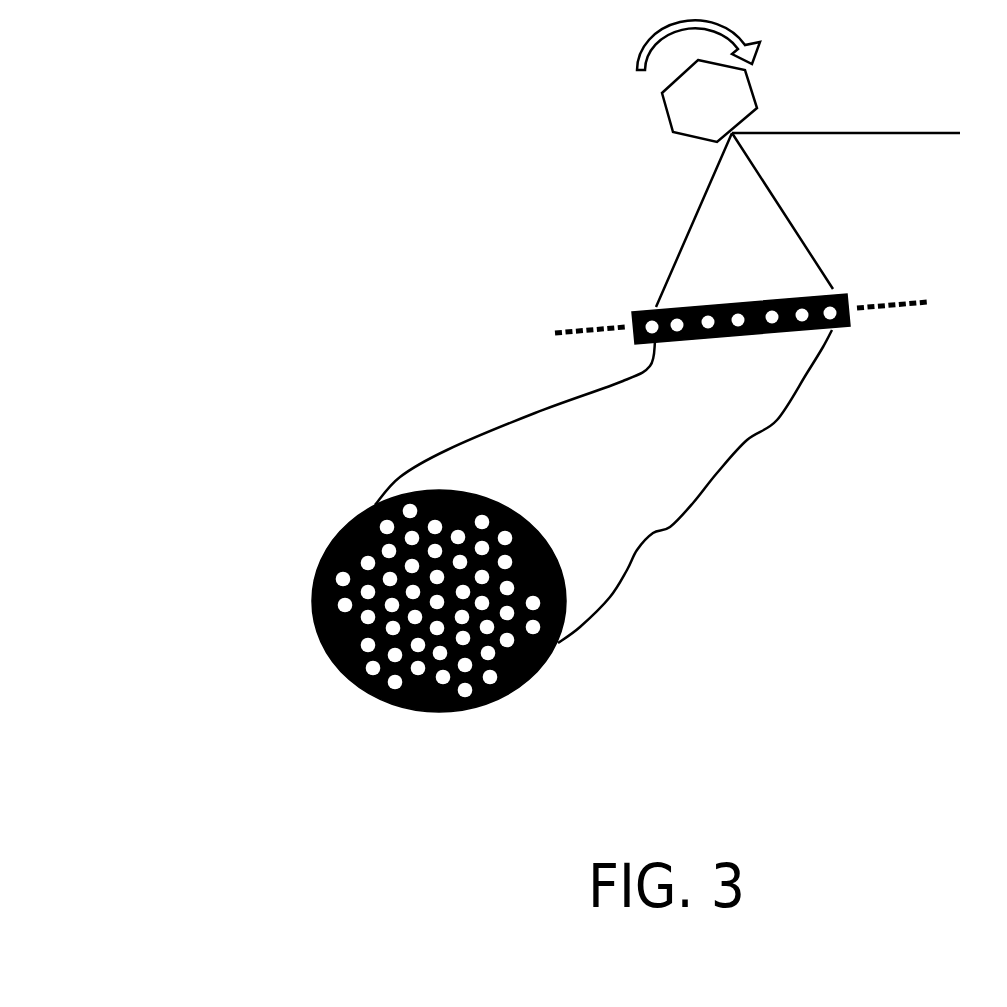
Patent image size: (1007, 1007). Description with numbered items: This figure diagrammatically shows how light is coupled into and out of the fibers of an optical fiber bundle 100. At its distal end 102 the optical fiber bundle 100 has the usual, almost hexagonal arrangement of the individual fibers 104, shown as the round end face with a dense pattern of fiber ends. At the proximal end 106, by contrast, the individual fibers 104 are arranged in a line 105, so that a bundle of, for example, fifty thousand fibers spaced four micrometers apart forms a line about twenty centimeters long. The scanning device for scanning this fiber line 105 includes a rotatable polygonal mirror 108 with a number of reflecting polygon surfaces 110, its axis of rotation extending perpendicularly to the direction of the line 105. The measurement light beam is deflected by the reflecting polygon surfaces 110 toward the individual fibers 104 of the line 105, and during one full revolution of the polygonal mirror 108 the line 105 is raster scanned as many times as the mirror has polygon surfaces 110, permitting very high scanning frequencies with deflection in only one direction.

The optical fiber bundle 100 is at (768, 445).
The distal end 102 is at (313, 632).
The individual fibers 104 is at (653, 308).
The line 105 is at (833, 285).
The proximal end 106 is at (835, 325).
The rotatable polygonal mirror 108 is at (653, 112).
The reflecting polygon surfaces 110 is at (752, 78).